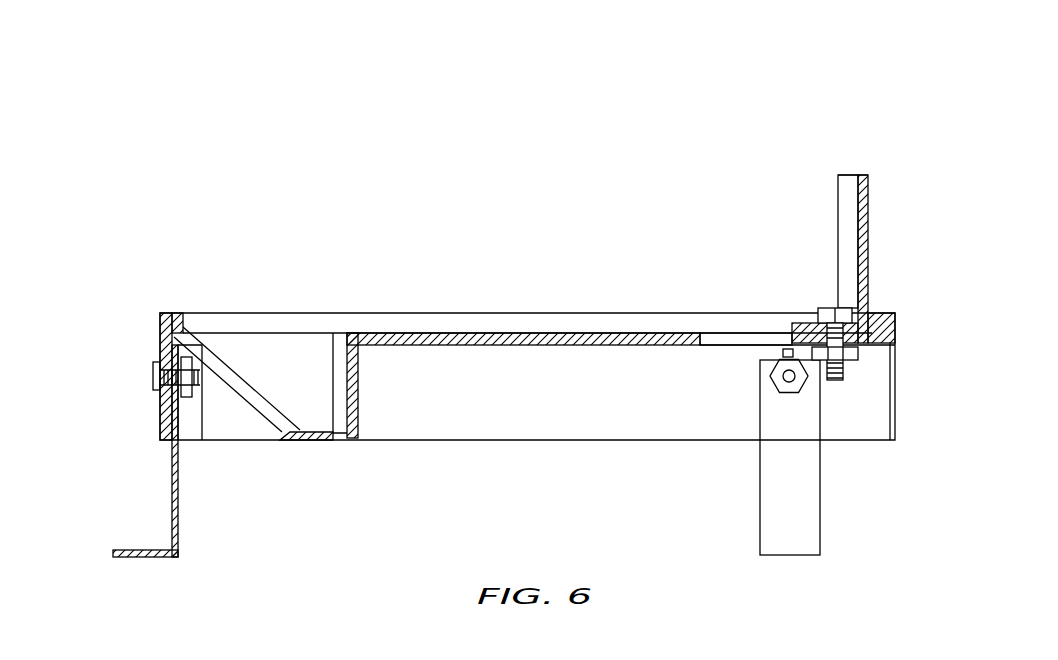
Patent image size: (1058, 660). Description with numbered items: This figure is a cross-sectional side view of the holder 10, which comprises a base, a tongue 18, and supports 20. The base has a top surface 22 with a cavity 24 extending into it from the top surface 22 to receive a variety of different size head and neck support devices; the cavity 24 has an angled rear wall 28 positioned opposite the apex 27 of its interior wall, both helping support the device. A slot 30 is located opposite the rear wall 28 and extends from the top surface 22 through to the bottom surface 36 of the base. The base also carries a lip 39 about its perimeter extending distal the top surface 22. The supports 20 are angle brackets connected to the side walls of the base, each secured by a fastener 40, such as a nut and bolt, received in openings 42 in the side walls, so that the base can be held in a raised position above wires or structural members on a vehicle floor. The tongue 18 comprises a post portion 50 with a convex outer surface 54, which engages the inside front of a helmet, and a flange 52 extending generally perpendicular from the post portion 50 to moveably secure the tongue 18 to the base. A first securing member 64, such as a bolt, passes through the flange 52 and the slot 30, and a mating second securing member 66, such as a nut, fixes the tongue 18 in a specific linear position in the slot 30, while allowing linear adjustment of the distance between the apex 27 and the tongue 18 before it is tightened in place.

The holder 10 is at (710, 145).
The tongue 18 is at (838, 182).
The supports 20 is at (170, 515).
The top surface 22 is at (510, 333).
The cavity 24 is at (300, 426).
The apex 27 is at (322, 357).
The rear wall 28 is at (232, 345).
The slot 30 is at (720, 340).
The bottom surface 36 is at (475, 345).
The lip 39 is at (192, 335).
The fastener 40 is at (153, 372).
The openings 42 is at (167, 413).
The post portion 50 is at (868, 248).
The flange portion 52 is at (800, 313).
The convex outer surface 54 is at (868, 192).
The first securing member 64 is at (843, 380).
The second securing member 66 is at (860, 353).